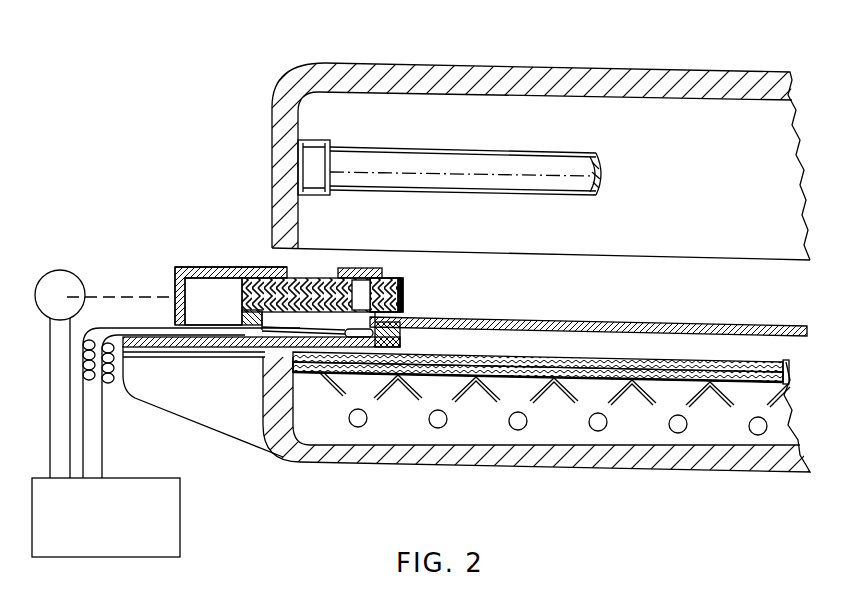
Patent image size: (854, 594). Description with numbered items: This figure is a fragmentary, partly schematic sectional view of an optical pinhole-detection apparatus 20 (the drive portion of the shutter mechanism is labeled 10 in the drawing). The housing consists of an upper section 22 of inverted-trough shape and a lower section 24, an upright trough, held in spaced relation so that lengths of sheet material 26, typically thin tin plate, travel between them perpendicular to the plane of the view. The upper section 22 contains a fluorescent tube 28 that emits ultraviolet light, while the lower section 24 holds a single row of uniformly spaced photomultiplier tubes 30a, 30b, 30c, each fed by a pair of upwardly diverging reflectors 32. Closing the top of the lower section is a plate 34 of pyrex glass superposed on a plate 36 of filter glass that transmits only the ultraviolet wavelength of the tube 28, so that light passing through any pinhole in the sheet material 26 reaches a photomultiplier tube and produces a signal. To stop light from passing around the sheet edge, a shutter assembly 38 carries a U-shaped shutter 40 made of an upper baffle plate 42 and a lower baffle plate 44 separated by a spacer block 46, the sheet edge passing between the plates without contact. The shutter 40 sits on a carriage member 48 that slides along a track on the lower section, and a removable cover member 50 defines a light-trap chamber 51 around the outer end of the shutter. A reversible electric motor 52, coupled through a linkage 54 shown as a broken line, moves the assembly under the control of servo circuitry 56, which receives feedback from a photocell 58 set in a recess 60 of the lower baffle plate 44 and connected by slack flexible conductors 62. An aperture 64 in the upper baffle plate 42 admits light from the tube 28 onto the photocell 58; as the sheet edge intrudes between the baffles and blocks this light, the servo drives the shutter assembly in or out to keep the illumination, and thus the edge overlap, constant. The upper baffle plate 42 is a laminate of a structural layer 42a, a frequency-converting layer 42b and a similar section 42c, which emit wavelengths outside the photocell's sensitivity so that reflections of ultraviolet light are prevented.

The drive assembly 10 is at (173, 273).
The optical pinhole-detection apparatus 20 is at (246, 128).
The upper housing section 22 is at (345, 64).
The lower housing section 24 is at (322, 465).
The sheet material 26 is at (558, 319).
The fluorescent tube 28 is at (453, 148).
The photomultiplier tube 30a is at (366, 424).
The photomultiplier tube 30b is at (446, 425).
The photomultiplier tube 30c is at (526, 427).
The reflectors 32 is at (330, 390).
The pyrex glass plate 34 is at (503, 358).
The filter glass plate 36 is at (598, 364).
The shutter assembly 38 is at (226, 260).
The shutter 40 is at (236, 300).
The upper baffle plate 42 is at (411, 292).
The structural layer 42a is at (381, 285).
The frequency converting layer 42b is at (404, 303).
The frequency converting section 42c is at (369, 283).
The lower baffle plate 44 is at (401, 340).
The spacer block 46 is at (268, 321).
The carriage member 48 is at (227, 348).
The cover member 50 is at (248, 266).
The light-trap chamber 51 is at (222, 322).
The reversible electric motor 52 is at (69, 276).
The linkage 54 is at (158, 297).
The servo circuitry 56 is at (172, 522).
The photocell 58 is at (340, 330).
The recess 60 is at (356, 330).
The flexible conductors 62 is at (102, 449).
The aperture 64 is at (360, 264).